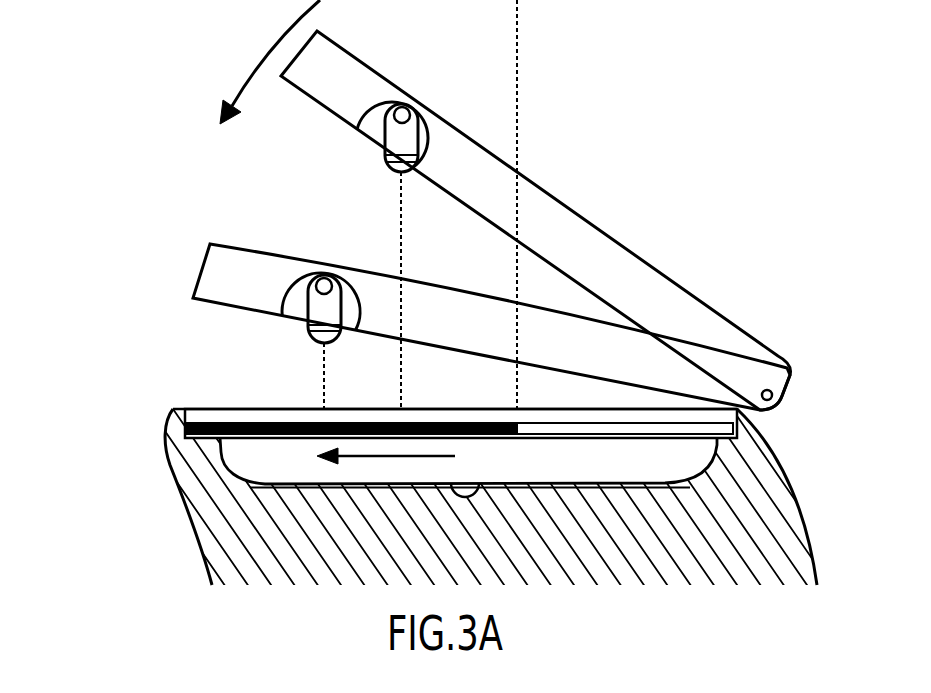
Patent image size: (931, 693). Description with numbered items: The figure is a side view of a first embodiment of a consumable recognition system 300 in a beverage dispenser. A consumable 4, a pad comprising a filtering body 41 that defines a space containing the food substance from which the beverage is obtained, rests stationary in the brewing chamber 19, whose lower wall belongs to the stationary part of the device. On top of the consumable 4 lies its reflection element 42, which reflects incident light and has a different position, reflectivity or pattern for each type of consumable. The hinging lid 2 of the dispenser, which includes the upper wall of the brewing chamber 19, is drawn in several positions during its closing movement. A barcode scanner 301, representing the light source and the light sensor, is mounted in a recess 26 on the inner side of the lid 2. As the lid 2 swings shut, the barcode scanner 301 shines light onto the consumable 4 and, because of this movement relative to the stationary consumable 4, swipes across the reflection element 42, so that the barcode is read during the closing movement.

The lid 2 is at (335, 43).
The recess 26 is at (295, 292).
The barcode scanner 301 is at (308, 308).
The reflection element 42 is at (232, 423).
The brewing chamber 19 is at (222, 453).
The filtering body 41 is at (240, 483).
The consumable 4 is at (540, 481).
The consumable recognition system 300 is at (142, 339).